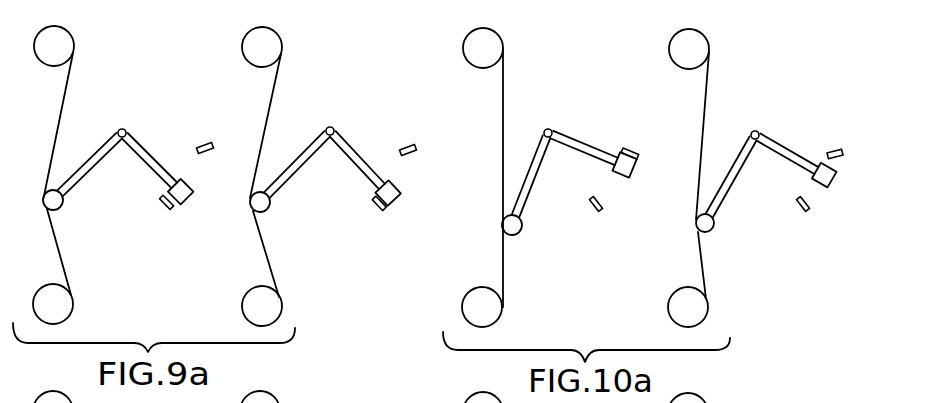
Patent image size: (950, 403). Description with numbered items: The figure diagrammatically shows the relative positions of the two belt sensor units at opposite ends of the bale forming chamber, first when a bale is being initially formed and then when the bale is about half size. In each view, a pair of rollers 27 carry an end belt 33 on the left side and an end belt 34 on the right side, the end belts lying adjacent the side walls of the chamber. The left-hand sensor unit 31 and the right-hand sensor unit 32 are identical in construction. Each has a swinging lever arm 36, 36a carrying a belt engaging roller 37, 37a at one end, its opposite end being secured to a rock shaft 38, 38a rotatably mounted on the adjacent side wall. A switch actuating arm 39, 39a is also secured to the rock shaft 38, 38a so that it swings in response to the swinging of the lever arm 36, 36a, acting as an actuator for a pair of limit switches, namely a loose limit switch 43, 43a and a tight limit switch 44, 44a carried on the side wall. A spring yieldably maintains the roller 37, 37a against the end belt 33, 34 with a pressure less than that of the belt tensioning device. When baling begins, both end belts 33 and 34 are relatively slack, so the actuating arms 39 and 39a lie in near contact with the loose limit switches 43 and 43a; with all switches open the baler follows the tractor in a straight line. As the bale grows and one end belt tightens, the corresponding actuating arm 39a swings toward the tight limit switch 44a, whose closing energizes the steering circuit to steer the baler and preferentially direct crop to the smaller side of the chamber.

In FIG. 9a, the rollers 27 is at (62, 47).
In FIG. 10a, the rollers 27 is at (490, 48).
In FIG. 9a, the left-hand sensor unit 31 is at (143, 138).
In FIG. 10a, the left-hand sensor unit 31 is at (588, 138).
In FIG. 9a, the right-hand sensor unit 32 is at (357, 138).
In FIG. 10a, the right-hand sensor unit 32 is at (777, 138).
In FIG. 9a, the end belt 33 is at (67, 98).
In FIG. 10a, the end belt 33 is at (505, 102).
In FIG. 9a, the end belt 34 is at (272, 100).
In FIG. 10a, the end belt 34 is at (707, 102).
In FIG. 9a, the swinging lever arm 36 is at (82, 177).
In FIG. 10a, the swinging lever arm 36 is at (535, 177).
In FIG. 9a, the swinging lever arm 36a is at (295, 167).
In FIG. 10a, the swinging lever arm 36a is at (737, 172).
In FIG. 9a, the belt engaging roller 37 is at (62, 210).
In FIG. 10a, the belt engaging roller 37 is at (518, 232).
In FIG. 9a, the belt engaging roller 37a is at (265, 207).
In FIG. 10a, the belt engaging roller 37a is at (711, 230).
In FIG. 9a, the rock shaft 38 is at (123, 128).
In FIG. 10a, the rock shaft 38 is at (552, 130).
In FIG. 9a, the rock shaft 38a is at (332, 127).
In FIG. 10a, the rock shaft 38a is at (756, 131).
In FIG. 9a, the switch actuating arm 39 is at (147, 155).
In FIG. 10a, the switch actuating arm 39 is at (597, 152).
In FIG. 9a, the switch actuating arm 39a is at (365, 160).
In FIG. 10a, the switch actuating arm 39a is at (792, 157).
In FIG. 9a, the loose limit switch 43 is at (171, 212).
In FIG. 10a, the loose limit switch 43 is at (602, 211).
In FIG. 9a, the loose limit switch 43a is at (382, 210).
In FIG. 10a, the loose limit switch 43a is at (808, 208).
In FIG. 9a, the tight limit switch 44 is at (205, 143).
In FIG. 10a, the tight limit switch 44 is at (633, 152).
In FIG. 9a, the tight limit switch 44a is at (417, 147).
In FIG. 10a, the tight limit switch 44a is at (842, 153).